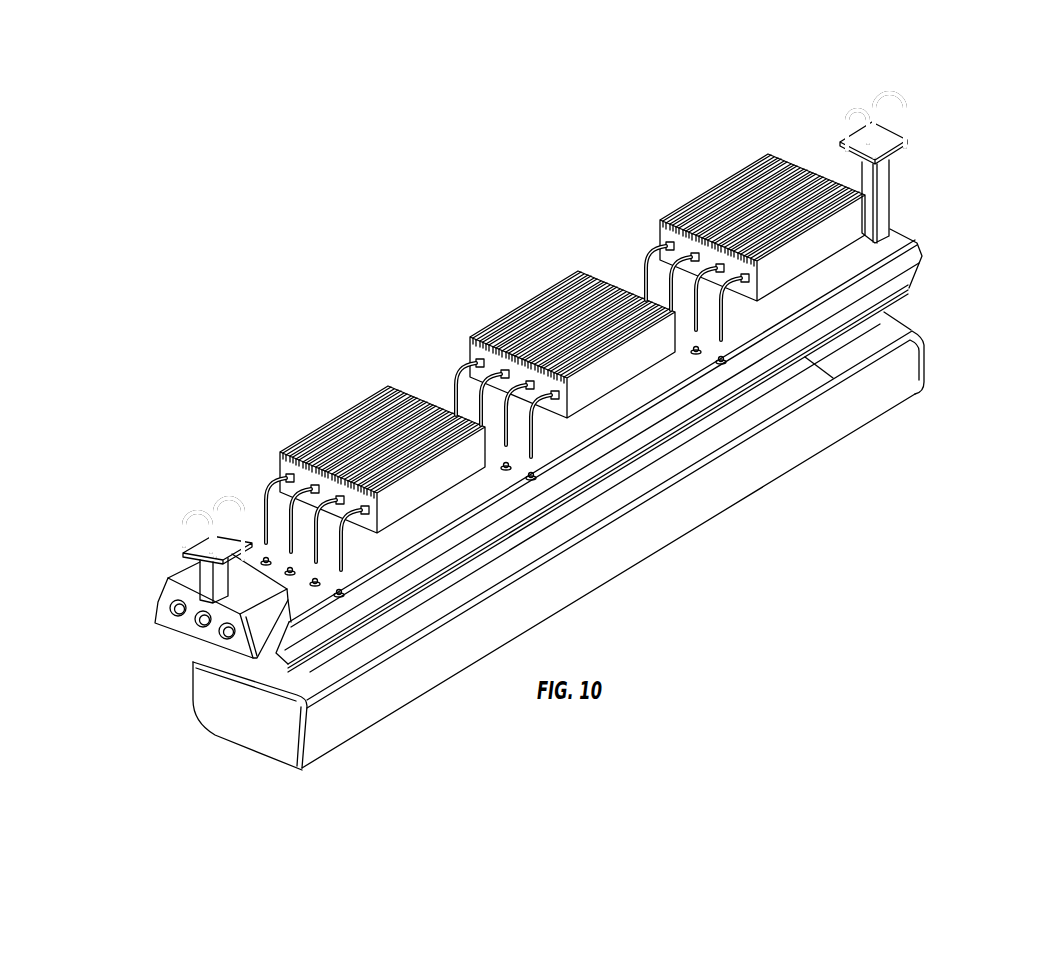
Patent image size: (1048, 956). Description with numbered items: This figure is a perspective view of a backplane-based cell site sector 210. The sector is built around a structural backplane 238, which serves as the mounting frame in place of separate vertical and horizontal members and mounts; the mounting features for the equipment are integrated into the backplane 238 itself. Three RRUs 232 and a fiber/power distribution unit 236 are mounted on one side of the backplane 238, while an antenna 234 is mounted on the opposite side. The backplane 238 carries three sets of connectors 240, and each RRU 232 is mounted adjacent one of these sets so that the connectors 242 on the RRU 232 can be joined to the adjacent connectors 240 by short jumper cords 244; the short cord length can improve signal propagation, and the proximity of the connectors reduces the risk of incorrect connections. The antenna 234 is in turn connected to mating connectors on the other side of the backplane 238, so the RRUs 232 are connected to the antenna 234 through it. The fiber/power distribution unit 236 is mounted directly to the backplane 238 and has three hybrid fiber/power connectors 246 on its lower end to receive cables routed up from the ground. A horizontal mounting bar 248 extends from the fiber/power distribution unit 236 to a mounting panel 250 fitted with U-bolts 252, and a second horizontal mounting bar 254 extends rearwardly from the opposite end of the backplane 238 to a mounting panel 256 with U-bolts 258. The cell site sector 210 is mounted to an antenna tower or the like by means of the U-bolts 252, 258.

The cell site sector 210 is at (981, 321).
The RRU 232 is at (780, 178).
The antenna 234 is at (280, 750).
The fiber/power distribution unit 236 is at (188, 578).
The structural backplane 238 is at (362, 565).
The connectors 240 is at (266, 560).
The connectors 242 is at (287, 476).
The jumper cords 244 is at (277, 487).
The hybrid fiber/power connectors 246 is at (225, 635).
The horizontal mounting bar 248 is at (207, 570).
The mounting panel 250 is at (181, 550).
The U-bolts 252 is at (182, 522).
The horizontal mounting bar 254 is at (890, 192).
The mounting panel 256 is at (910, 140).
The U-bolts 258 is at (895, 102).